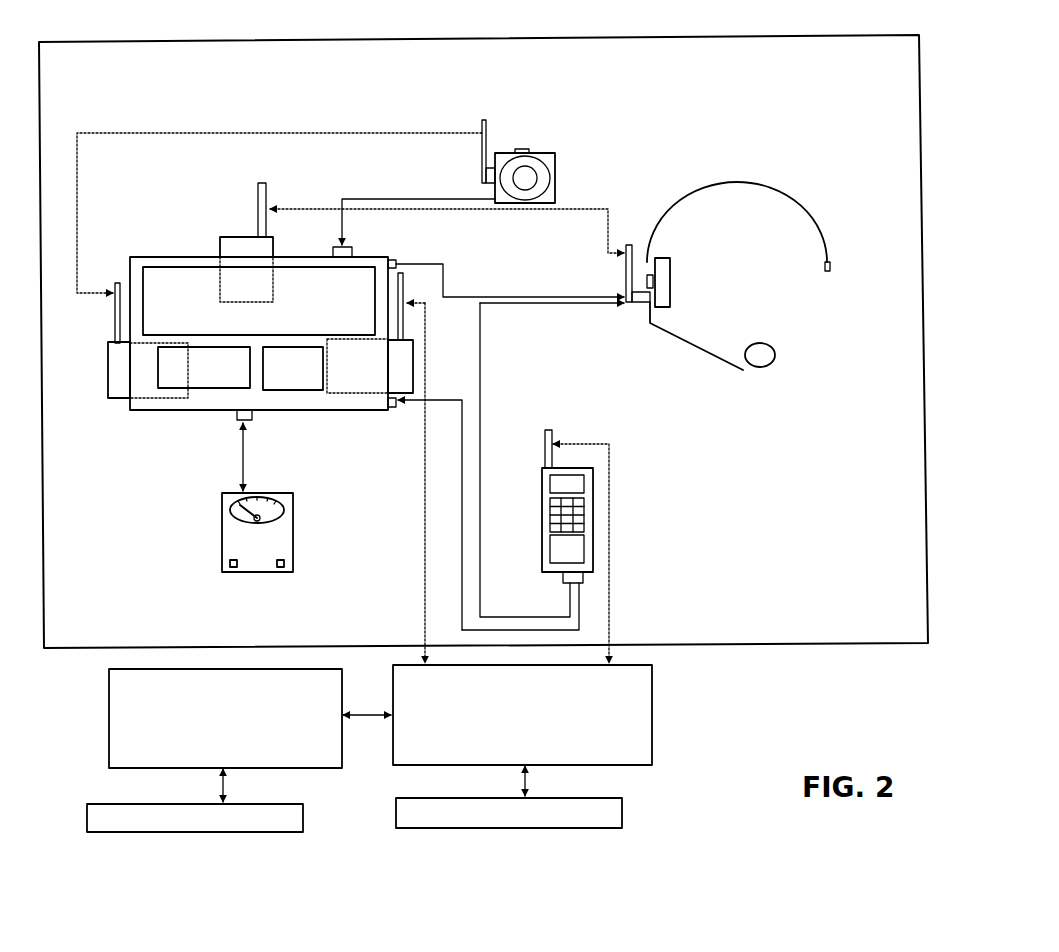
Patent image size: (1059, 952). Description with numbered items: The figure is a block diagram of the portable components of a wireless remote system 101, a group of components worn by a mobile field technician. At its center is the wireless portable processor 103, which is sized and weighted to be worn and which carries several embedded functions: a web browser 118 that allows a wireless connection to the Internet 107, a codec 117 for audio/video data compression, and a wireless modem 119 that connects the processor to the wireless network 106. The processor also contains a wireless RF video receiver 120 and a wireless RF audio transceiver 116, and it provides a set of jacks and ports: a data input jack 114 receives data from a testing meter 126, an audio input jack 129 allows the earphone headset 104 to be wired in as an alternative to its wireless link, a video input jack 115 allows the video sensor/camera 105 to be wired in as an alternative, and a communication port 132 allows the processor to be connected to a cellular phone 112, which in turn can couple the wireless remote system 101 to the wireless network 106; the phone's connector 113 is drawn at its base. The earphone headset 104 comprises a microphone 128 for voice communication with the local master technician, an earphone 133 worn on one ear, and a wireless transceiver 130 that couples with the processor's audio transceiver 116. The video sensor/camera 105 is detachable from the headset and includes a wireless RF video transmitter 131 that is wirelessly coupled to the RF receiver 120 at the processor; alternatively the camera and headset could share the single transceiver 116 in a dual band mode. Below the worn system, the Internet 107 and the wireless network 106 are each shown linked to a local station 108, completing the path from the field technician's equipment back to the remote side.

The wireless remote system 101 is at (170, 40).
The wireless portable processor 103 is at (192, 257).
The earphone headset 104 is at (737, 182).
The video sensor/camera 105 is at (527, 152).
The wireless network 106 is at (652, 718).
The Internet 107 is at (109, 724).
The local station 108 is at (303, 818).
The cellular phone 112 is at (593, 527).
The telephone connector 113 is at (585, 580).
The data input jack 114 is at (237, 415).
The video input jack 115 is at (346, 248).
The wireless RF audio transceiver 116 is at (273, 240).
The codec 117 is at (297, 390).
The web browser 118 is at (207, 388).
The wireless modem 119 is at (358, 393).
The wireless RF video receiver 120 is at (108, 372).
The testing meter 126 is at (257, 572).
The microphone 128 is at (763, 367).
The audio input jack 129 is at (399, 262).
The wireless transceiver 130 is at (640, 303).
The wireless RF video transmitter 131 is at (482, 180).
The communication port 132 is at (396, 408).
The earphone 133 is at (670, 268).